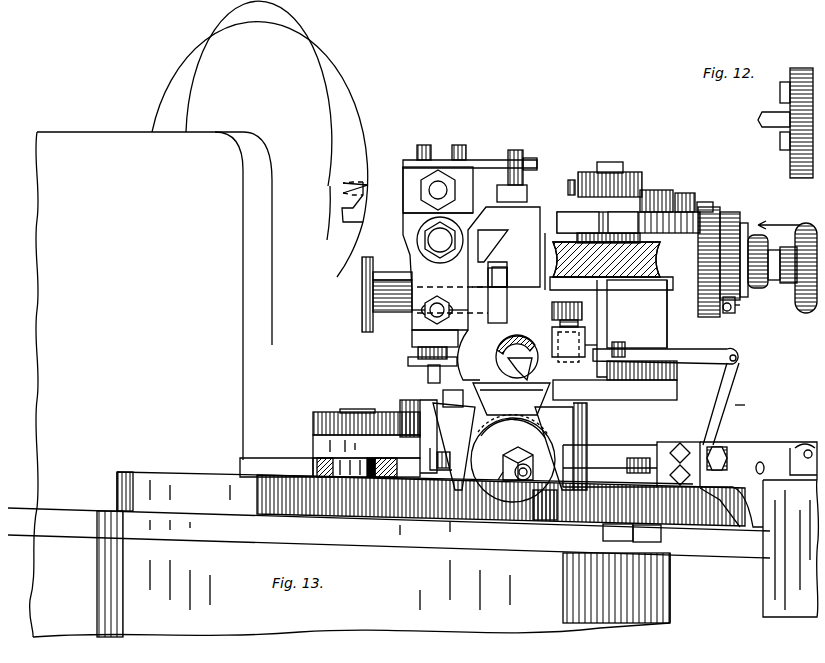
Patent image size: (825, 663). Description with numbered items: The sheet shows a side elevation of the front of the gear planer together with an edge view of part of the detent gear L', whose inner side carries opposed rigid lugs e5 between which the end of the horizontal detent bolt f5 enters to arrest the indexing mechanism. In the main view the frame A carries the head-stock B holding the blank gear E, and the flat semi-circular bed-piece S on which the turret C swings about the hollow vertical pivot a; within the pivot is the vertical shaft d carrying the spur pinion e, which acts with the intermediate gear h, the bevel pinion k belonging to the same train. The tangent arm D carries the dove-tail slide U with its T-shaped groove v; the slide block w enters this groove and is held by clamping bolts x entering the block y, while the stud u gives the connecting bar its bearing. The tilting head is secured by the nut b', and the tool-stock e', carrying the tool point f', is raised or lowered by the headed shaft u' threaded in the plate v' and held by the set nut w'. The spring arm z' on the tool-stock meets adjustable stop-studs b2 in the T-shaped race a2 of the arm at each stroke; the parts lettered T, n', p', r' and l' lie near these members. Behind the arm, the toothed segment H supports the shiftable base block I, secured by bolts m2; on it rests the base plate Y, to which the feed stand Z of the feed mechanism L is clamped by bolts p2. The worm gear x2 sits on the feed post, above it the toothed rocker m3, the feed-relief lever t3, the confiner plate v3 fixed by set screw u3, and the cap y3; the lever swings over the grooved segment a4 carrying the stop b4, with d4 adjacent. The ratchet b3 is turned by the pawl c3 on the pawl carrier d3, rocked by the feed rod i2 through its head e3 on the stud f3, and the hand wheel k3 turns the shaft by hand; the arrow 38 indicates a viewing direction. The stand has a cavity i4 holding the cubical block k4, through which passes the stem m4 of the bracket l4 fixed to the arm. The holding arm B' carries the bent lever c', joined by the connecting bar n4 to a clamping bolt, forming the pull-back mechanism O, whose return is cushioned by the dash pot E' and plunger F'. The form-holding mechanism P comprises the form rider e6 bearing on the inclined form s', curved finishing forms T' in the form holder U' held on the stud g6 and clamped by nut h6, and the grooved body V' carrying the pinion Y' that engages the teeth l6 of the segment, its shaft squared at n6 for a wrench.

In FIG. 13, the head-stock B is at (151, 384).
In FIG. 13, the blank gear E is at (260, 139).
In FIG. 13, the frame A is at (389, 572).
In FIG. 13, the circular toothed segment H is at (700, 534).
In FIG. 13, the holding arm B' is at (737, 484).
In FIG. 13, the pull-back mechanism O is at (758, 470).
In FIG. 13, the plunger F' is at (800, 473).
In FIG. 13, the dash pot E' is at (790, 548).
In FIG. 13, the connecting bar n4 is at (690, 355).
In FIG. 13, the bent lever c' is at (746, 399).
In FIG. 13, the base plate Y is at (615, 380).
In FIG. 13, the base block I is at (610, 453).
In FIG. 13, the bolts m2 is at (438, 445).
In FIG. 13, the feed mechanism L is at (632, 328).
In FIG. 13, the feed stand Z is at (654, 314).
In FIG. 13, the clamping bolts p2 is at (623, 333).
In FIG. 13, the offset stem m4 is at (580, 320).
In FIG. 13, the cubical block k4 is at (568, 344).
In FIG. 13, the rectangular cavity i4 is at (590, 350).
In FIG. 13, the cap y3 is at (610, 162).
In FIG. 13, the confiner plate v3 is at (642, 180).
In FIG. 13, the set screw u3 is at (579, 173).
In FIG. 13, the stop b4 is at (660, 192).
In FIG. 13, the pinion d4 is at (684, 195).
In FIG. 13, the feed-relief lever t3 is at (704, 202).
In FIG. 13, the rocker m3 is at (628, 220).
In FIG. 13, the grooved segment a4 is at (623, 221).
In FIG. 13, the worm gear x2 is at (662, 258).
In FIG. 13, the pawl carrier d3 is at (712, 317).
In FIG. 13, the pawl c3 is at (730, 212).
In FIG. 13, the ratchet b3 is at (762, 285).
In FIG. 13, the stud f3 is at (748, 297).
In FIG. 13, the hand wheel k3 is at (806, 313).
In FIG. 13, the shiftable head e3 is at (727, 313).
In FIG. 13, the feed rod i2 is at (737, 312).
In FIG. 13, the direction arrow 38 is at (779, 218).
In FIG. 13, the tool holder T is at (458, 245).
In FIG. 13, the bolts n' is at (441, 142).
In FIG. 13, the plate p' is at (444, 190).
In FIG. 13, the vertical pivot a is at (360, 470).
In FIG. 13, the nut b' is at (440, 249).
In FIG. 13, the tool-stock e' is at (443, 202).
In FIG. 13, the plate side r' is at (411, 191).
In FIG. 13, the stop-studs b2 is at (512, 160).
In FIG. 13, the spring arm z' is at (538, 155).
In FIG. 13, the T-shaped race a2 is at (527, 190).
In FIG. 13, the tangent arm D is at (493, 240).
In FIG. 13, the dove-tail slide U is at (497, 268).
In FIG. 13, the sliding block y is at (508, 275).
In FIG. 13, the T-shaped groove v is at (510, 295).
In FIG. 13, the bracket l4 is at (478, 300).
In FIG. 13, the slide block w is at (417, 270).
In FIG. 13, the stud u is at (358, 294).
In FIG. 13, the clamping bolts x is at (404, 305).
In FIG. 13, the intermediate gear h is at (448, 305).
In FIG. 13, the bevel pinion k is at (418, 319).
In FIG. 13, the lug l' is at (421, 265).
In FIG. 13, the tool point f' is at (362, 176).
In FIG. 13, the plate v' is at (435, 338).
In FIG. 13, the headed shaft u' is at (428, 366).
In FIG. 13, the set nut w' is at (423, 359).
In FIG. 13, the grooved body V' is at (461, 368).
In FIG. 13, the form rider e6 is at (520, 369).
In FIG. 13, the form s' is at (511, 399).
In FIG. 13, the curved forms T' is at (510, 446).
In FIG. 13, the form-holding mechanism P is at (513, 458).
In FIG. 13, the form holder U' is at (509, 463).
In FIG. 13, the stud g6 is at (530, 467).
In FIG. 13, the clamping nut h6 is at (500, 479).
In FIG. 13, the spur pinion e is at (366, 414).
In FIG. 13, the turret C is at (313, 441).
In FIG. 13, the vertical shaft d is at (357, 403).
In FIG. 13, the bed-piece S is at (240, 460).
In FIG. 13, the teeth l6 is at (406, 508).
In FIG. 13, the pinion Y' is at (618, 532).
In FIG. 13, the squared end n6 is at (647, 531).
In FIG. 12, the detent gear L' is at (789, 123).
In FIG. 12, the lugs e5 is at (780, 142).
In FIG. 12, the detent bolt f5 is at (758, 120).